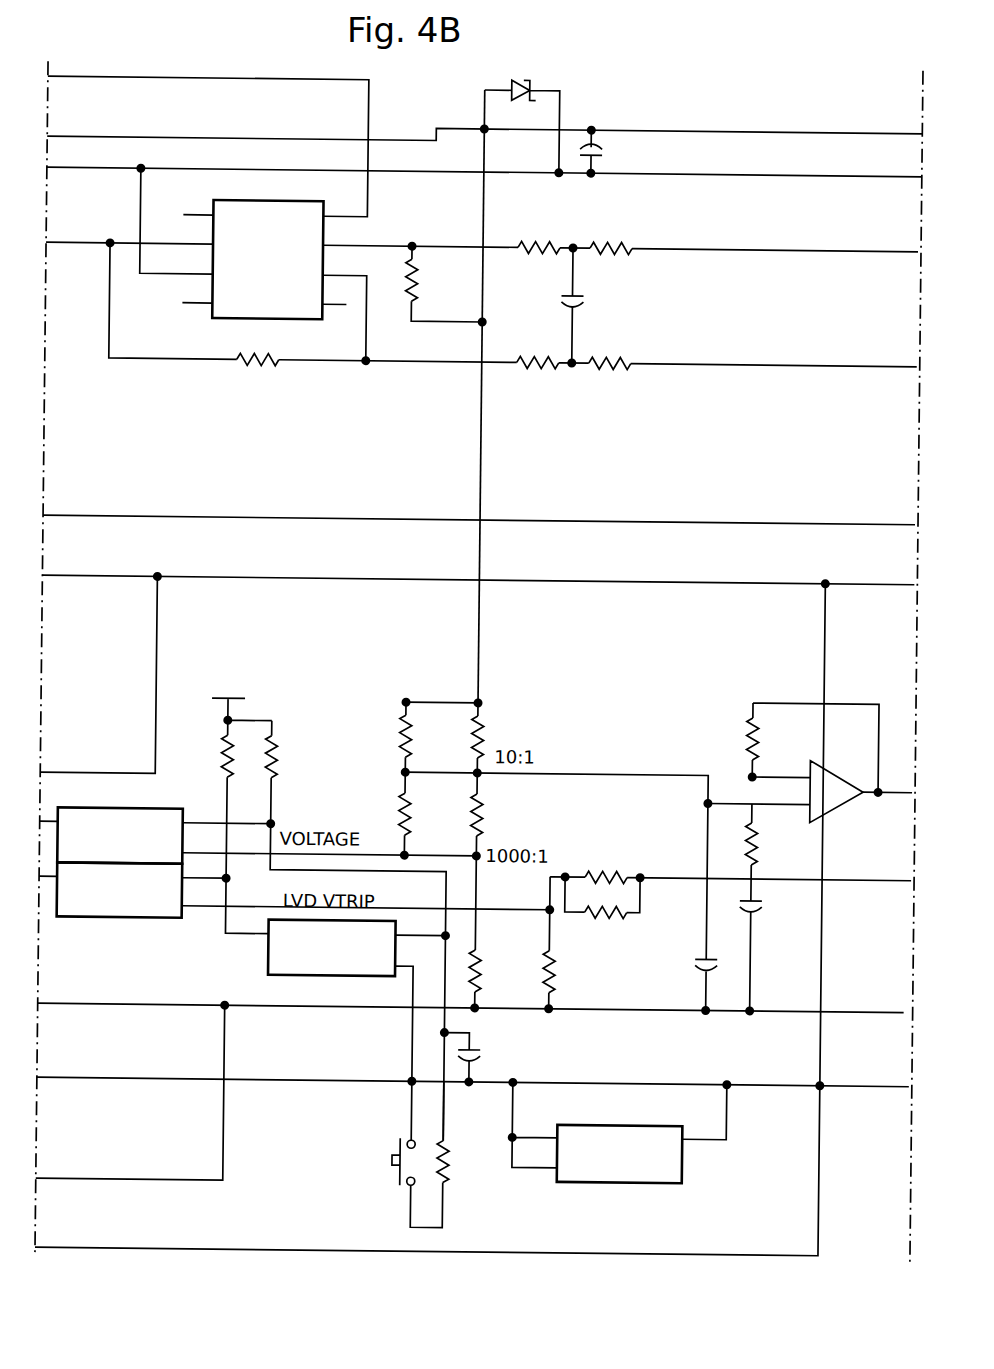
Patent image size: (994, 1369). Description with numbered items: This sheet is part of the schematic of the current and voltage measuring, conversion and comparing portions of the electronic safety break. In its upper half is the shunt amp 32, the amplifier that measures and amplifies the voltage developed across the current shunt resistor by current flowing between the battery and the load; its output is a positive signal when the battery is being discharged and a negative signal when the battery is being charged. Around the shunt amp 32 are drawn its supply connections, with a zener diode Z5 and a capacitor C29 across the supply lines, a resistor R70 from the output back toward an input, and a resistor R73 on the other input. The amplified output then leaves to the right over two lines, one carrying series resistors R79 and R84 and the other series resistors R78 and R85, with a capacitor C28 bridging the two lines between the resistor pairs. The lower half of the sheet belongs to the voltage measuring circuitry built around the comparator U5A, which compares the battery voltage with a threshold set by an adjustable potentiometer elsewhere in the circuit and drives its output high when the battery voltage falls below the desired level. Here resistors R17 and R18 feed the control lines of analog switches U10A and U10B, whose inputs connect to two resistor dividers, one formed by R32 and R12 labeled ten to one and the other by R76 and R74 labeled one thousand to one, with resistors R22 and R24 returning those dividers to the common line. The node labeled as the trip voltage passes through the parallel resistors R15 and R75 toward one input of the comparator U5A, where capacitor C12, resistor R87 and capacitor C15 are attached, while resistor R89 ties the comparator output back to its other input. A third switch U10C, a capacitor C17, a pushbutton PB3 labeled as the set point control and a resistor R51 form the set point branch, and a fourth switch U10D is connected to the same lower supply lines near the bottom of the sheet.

The shunt amp 32 is at (213, 321).
The zener diode 5.1V Z5 is at (531, 106).
The capacitor 100nF C29 is at (619, 165).
The resistor 10K R70 is at (257, 360).
The resistor 10K R73 is at (446, 286).
The resistor 909 ohms R79 is at (561, 237).
The resistor 90.9 ohms R84 is at (677, 263).
The resistor 909 ohms R78 is at (538, 366).
The resistor 90.9 ohms R85 is at (674, 377).
The capacitor 100nF C28 is at (601, 306).
The resistor 10K R17 is at (222, 805).
The resistor 10K R18 is at (354, 931).
The analog switch 4066 U10A is at (258, 827).
The analog switch 4066 U10B is at (294, 905).
The resistor 100K R32 is at (380, 737).
The resistor 909K R76 is at (454, 737).
The resistor 10K R12 is at (384, 814).
The resistor 1MEG R74 is at (504, 815).
The resistor 100 R22 is at (496, 932).
The resistor 100 R24 is at (571, 944).
The resistor 10K R15 is at (731, 857).
The resistor 1MEG R75 is at (605, 922).
The capacitor 100nF C12 is at (679, 983).
The analog switch 4066 U10C is at (355, 1030).
The comparator U5A is at (809, 806).
The resistor 1MEG R89 is at (781, 747).
The resistor 1K R87 is at (771, 842).
The capacitor 100nF C15 is at (778, 945).
The capacitor 100nF C17 is at (494, 1057).
The pushbutton LVD setpoint PB3 is at (346, 1182).
The resistor 1K R51 is at (462, 1137).
The analog switch 4066 U10D is at (617, 1144).